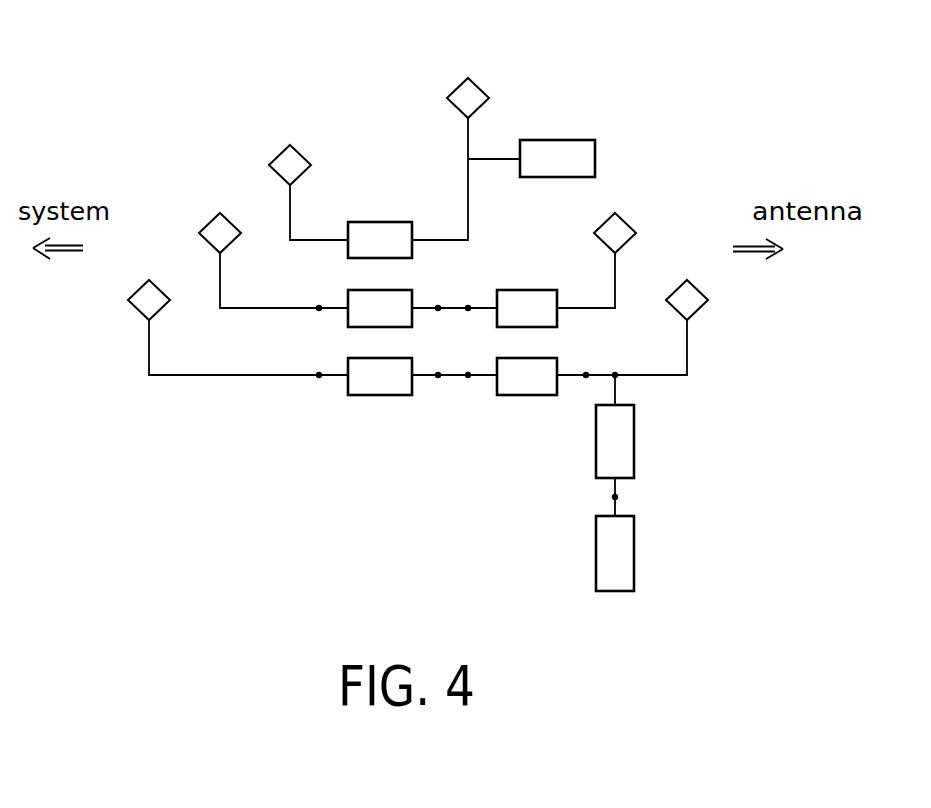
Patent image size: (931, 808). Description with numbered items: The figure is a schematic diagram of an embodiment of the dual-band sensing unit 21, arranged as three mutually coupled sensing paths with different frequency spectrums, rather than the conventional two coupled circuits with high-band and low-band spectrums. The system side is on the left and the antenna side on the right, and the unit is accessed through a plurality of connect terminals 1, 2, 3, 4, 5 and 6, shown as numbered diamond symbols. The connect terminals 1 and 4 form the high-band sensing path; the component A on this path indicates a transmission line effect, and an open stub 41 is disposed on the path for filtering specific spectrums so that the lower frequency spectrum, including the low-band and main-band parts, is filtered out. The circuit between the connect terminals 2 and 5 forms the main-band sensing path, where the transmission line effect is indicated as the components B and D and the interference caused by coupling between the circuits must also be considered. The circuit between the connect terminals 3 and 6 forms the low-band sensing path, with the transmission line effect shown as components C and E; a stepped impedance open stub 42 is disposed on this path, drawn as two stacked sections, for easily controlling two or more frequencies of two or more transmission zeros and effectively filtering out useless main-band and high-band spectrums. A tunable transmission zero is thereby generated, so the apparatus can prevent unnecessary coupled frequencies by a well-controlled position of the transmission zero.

The dual-band sensing unit 21 is at (118, 58).
The connect terminal 1 is at (308, 192).
The connect terminal 2 is at (273, 262).
The connect terminal 3 is at (238, 329).
The connect terminal 4 is at (450, 159).
The connect terminal 5 is at (596, 260).
The connect terminal 6 is at (632, 329).
The open stub 41 is at (570, 140).
The stepped impedance open stub 42 is at (653, 405).